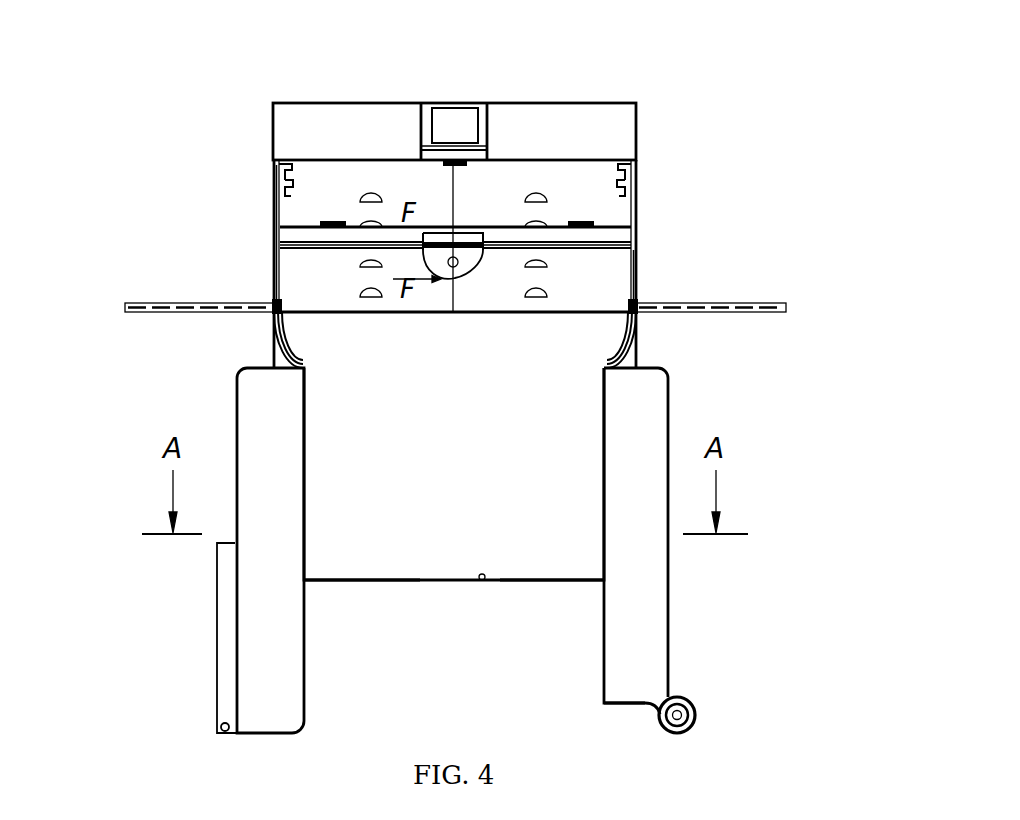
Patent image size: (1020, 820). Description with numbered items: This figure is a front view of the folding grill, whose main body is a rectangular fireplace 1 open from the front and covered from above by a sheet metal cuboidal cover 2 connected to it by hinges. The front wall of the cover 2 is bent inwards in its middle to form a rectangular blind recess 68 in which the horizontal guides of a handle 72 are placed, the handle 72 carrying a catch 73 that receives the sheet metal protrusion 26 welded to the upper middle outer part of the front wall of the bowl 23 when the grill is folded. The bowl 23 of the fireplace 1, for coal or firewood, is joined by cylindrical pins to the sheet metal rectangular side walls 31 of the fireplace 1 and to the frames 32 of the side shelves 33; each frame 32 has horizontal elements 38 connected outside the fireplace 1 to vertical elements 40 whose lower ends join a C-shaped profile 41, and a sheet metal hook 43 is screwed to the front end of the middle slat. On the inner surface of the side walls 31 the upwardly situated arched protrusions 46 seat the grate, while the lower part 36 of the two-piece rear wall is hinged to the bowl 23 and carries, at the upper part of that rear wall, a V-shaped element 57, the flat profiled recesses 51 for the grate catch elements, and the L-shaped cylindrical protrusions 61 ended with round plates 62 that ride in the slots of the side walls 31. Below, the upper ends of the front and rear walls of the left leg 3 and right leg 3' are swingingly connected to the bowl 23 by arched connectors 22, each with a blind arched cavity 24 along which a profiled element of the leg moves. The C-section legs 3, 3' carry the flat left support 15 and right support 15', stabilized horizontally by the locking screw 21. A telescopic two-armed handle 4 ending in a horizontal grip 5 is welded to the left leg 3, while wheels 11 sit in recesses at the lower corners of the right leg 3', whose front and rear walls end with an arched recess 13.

The fireplace 1 is at (345, 332).
The cover 2 is at (615, 108).
The left leg 3 is at (211, 550).
The right leg 3' is at (709, 541).
The telescopic two-armed metal handle 4 is at (223, 728).
The grip 5 is at (218, 733).
The wheels 11 is at (693, 710).
The arched recess 13 is at (635, 703).
The left support 15 is at (362, 632).
The right support 15' is at (552, 631).
The locking screw 21 is at (482, 576).
The arched connectors 22 is at (272, 325).
The bowl 23 is at (525, 342).
The blind arched cavity 24 is at (275, 356).
The protrusion 26 is at (453, 318).
The side walls 31 is at (633, 218).
The frames 32 is at (262, 312).
The side shelves 33 is at (180, 305).
The lower part of the rear wall 36 is at (613, 287).
The horizontal elements 38 is at (650, 303).
The vertical elements 40 is at (647, 317).
The profile 41 is at (787, 312).
The hook 43 is at (212, 313).
The horizontal arched protrusions 46 is at (276, 262).
The flat profiled recesses 51 is at (543, 190).
The V-shaped sheet metal element 57 is at (560, 238).
The cylindrical protrusions 61 is at (270, 165).
The round plate 62 is at (275, 195).
The rectangular blind recess 68 is at (453, 160).
The handle 72 is at (487, 108).
The catch 73 is at (440, 115).